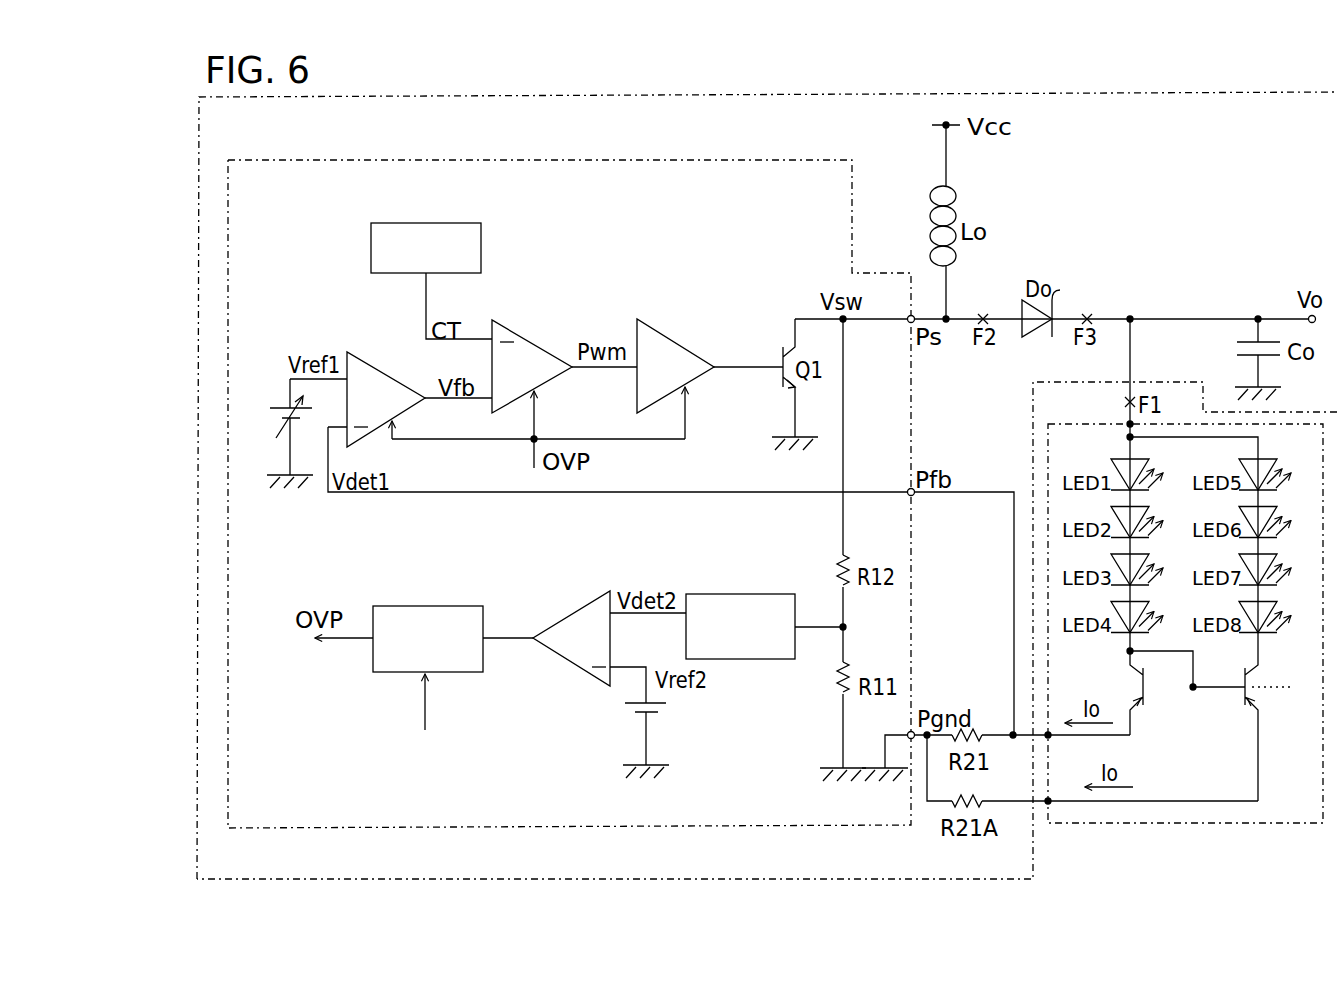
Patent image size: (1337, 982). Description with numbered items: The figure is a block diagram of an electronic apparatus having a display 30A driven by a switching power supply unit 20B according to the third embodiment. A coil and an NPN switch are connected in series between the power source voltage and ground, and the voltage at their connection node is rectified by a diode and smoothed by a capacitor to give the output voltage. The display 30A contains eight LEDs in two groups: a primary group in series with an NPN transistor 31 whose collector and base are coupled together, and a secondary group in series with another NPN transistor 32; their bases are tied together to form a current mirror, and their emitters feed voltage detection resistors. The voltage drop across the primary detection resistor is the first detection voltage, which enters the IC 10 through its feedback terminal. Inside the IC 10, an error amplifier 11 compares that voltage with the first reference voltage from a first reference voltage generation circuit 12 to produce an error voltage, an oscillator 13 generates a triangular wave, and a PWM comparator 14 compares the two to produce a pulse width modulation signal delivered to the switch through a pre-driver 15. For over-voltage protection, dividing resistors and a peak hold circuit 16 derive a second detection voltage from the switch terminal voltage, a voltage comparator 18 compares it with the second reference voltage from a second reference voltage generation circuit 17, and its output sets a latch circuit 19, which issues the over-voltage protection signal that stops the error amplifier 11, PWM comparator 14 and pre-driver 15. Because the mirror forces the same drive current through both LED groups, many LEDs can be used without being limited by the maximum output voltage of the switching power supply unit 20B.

The IC 10 is at (680, 826).
The error amplifier 11 is at (392, 373).
The first reference voltage generation circuit 12 is at (282, 405).
The oscillator 13 is at (483, 245).
The PWM comparator 14 is at (535, 343).
The pre-driver 15 is at (678, 340).
The peak hold circuit 16 is at (745, 594).
The second reference voltage generation circuit 17 is at (663, 710).
The voltage comparator 18 is at (567, 613).
The latch circuit 19 is at (400, 606).
The switching power supply unit 20B is at (1036, 862).
The display 30A is at (1225, 823).
The NPN transistor 31 is at (1148, 710).
The NPN transistor 32 is at (1262, 712).